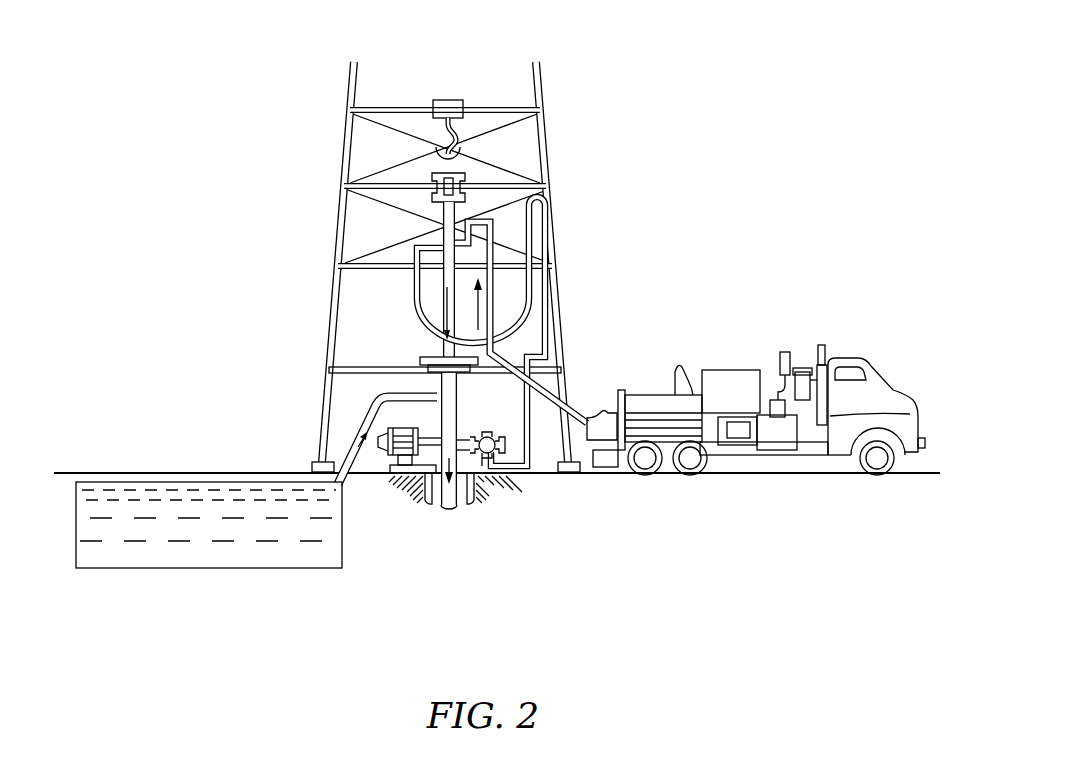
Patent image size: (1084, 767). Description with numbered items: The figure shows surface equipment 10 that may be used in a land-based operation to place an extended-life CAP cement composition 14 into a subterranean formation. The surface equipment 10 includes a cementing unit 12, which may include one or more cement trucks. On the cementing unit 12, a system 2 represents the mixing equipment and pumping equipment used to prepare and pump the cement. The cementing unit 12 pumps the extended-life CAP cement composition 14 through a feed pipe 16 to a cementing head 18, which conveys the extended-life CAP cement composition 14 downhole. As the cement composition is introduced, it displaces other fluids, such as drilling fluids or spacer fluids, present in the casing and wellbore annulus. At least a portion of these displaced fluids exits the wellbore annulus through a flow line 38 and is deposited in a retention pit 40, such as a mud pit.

The surface equipment 10 is at (490, 335).
The cementing head 18 is at (486, 179).
The extended-life CAP cement composition 14 is at (440, 297).
The feed pipe 16 is at (540, 388).
The system 2 is at (756, 440).
The cementing unit 12 is at (808, 458).
The flow line 38 is at (360, 462).
The retention pit 40 is at (127, 568).